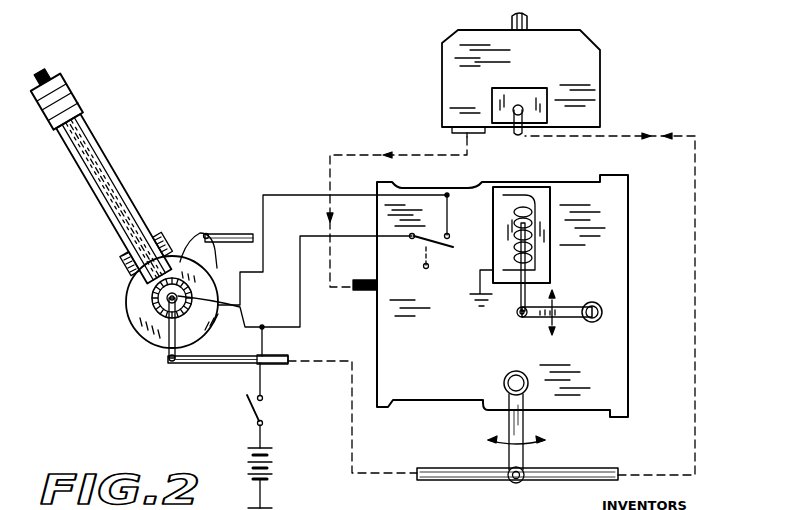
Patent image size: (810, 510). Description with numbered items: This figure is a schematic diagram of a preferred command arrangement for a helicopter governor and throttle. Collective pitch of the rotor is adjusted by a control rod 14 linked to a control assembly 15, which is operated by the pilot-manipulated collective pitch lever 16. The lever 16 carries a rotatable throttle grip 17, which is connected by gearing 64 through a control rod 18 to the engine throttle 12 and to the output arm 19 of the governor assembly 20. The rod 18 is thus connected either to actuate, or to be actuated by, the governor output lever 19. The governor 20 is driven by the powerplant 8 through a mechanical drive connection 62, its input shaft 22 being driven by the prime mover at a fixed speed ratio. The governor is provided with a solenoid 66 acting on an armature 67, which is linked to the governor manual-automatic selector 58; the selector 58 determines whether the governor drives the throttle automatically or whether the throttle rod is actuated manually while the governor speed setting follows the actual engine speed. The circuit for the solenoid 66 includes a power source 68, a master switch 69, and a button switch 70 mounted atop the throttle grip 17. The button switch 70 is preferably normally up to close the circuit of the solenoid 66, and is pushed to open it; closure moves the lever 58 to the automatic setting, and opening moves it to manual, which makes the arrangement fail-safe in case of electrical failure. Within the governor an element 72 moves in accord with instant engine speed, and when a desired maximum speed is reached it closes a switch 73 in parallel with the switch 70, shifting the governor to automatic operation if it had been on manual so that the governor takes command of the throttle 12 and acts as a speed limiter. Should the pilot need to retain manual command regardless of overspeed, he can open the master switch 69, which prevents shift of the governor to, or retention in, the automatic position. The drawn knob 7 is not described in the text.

The control knob 7 is at (529, 16).
The powerplant 8 is at (590, 38).
The throttle 12 is at (527, 108).
The control rod 14 is at (232, 223).
The control assembly 15 is at (126, 305).
The collective pitch lever 16 is at (123, 183).
The throttle grip 17 is at (72, 96).
The control rod 18 is at (457, 470).
The output arm 19 is at (508, 422).
The governor assembly 20 is at (629, 332).
The input shaft 22 is at (359, 291).
The manual control 58 is at (566, 303).
The mechanical drive connection 62 is at (342, 152).
The gearing 64 is at (150, 305).
The solenoid 66 is at (531, 210).
The armature 67 is at (517, 318).
The power source 68 is at (276, 465).
The master switch 69 is at (266, 411).
The button switch 70 is at (35, 73).
The element 72 is at (430, 260).
The switch 73 is at (432, 237).